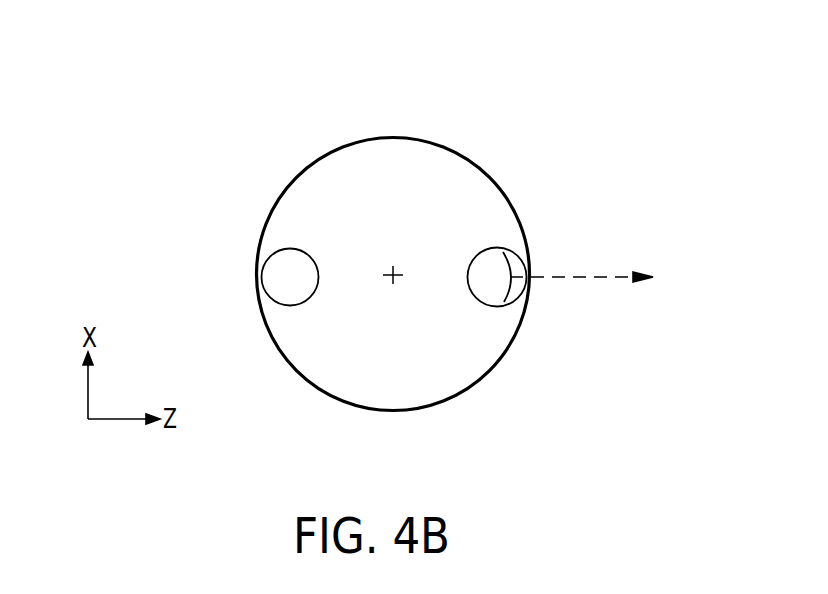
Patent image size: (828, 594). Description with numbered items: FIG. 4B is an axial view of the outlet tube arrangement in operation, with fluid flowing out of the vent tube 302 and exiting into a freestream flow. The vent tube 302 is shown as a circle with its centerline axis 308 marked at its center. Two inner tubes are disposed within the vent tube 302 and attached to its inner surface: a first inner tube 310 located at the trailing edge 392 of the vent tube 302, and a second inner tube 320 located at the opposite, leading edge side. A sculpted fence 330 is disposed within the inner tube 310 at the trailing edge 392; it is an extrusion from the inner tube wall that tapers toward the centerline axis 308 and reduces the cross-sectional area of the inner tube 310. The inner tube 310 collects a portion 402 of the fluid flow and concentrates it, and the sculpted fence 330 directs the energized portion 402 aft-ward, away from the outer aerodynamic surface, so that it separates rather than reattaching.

The vent tube 302 is at (423, 138).
The centerline axis 308 is at (392, 271).
The inner tube 310 is at (530, 268).
The inner tube 320 is at (268, 250).
The sculpted fence 330 is at (468, 264).
The trailing edge 392 is at (538, 276).
The portion of fluid flow 402 is at (510, 277).